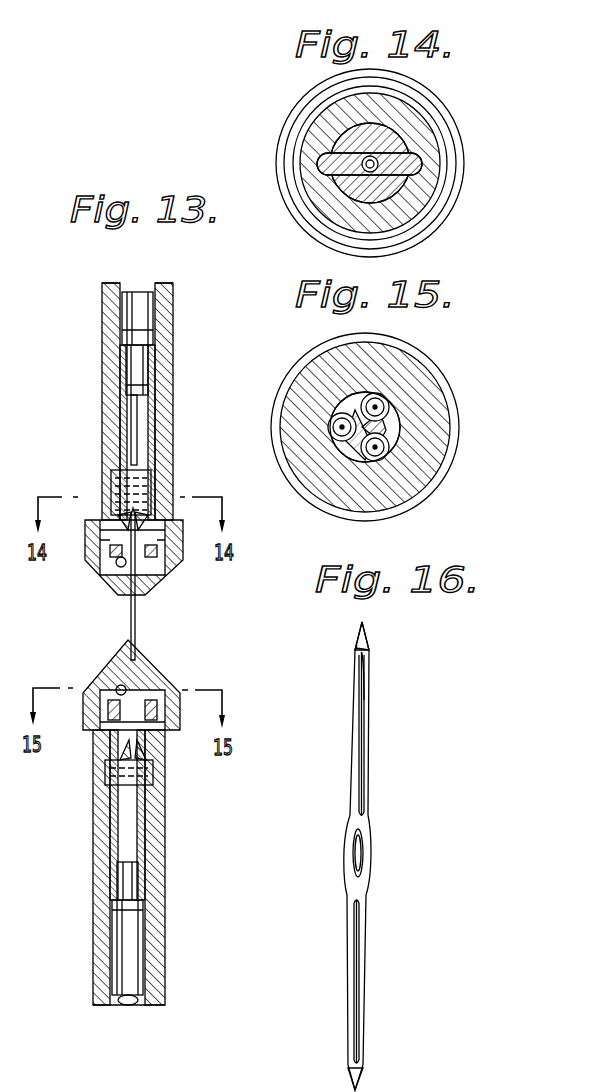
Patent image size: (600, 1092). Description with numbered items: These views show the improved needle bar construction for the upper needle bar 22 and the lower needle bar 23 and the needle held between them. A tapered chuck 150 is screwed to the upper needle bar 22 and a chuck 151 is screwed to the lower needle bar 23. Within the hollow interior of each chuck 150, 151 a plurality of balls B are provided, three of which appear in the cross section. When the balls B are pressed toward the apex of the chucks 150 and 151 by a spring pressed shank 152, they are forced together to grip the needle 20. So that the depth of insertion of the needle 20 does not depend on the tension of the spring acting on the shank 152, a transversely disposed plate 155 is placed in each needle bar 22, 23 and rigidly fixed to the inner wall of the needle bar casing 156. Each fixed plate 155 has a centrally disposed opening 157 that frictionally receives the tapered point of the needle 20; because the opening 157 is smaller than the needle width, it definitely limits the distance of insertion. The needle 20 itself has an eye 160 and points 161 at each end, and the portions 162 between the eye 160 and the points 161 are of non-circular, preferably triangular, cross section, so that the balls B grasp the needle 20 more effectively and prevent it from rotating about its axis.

In FIG. 13, the needle 20 is at (130, 607).
In FIG. 15, the needle 20 is at (355, 395).
In FIG. 16, the needle 20 is at (395, 773).
In FIG. 13, the upper needle bar 22 is at (174, 398).
In FIG. 13, the lower needle bar 23 is at (167, 862).
In FIG. 13, the tapered chuck 150 is at (160, 580).
In FIG. 14, the tapered chuck 150 is at (292, 118).
In FIG. 13, the chuck 151 is at (160, 675).
In FIG. 15, the chuck 151 is at (458, 442).
In FIG. 13, the spring pressed shank 152 is at (126, 318).
In FIG. 13, the transversely disposed plate 155 is at (118, 482).
In FIG. 14, the transversely disposed plate 155 is at (410, 162).
In FIG. 13, the needle bar casing 156 is at (103, 424).
In FIG. 14, the needle bar casing 156 is at (425, 185).
In FIG. 13, the opening 157 is at (126, 522).
In FIG. 16, the eye 160 is at (360, 858).
In FIG. 16, the points 161 is at (366, 640).
In FIG. 16, the portions 162 is at (359, 736).
In FIG. 15, the balls B is at (378, 406).